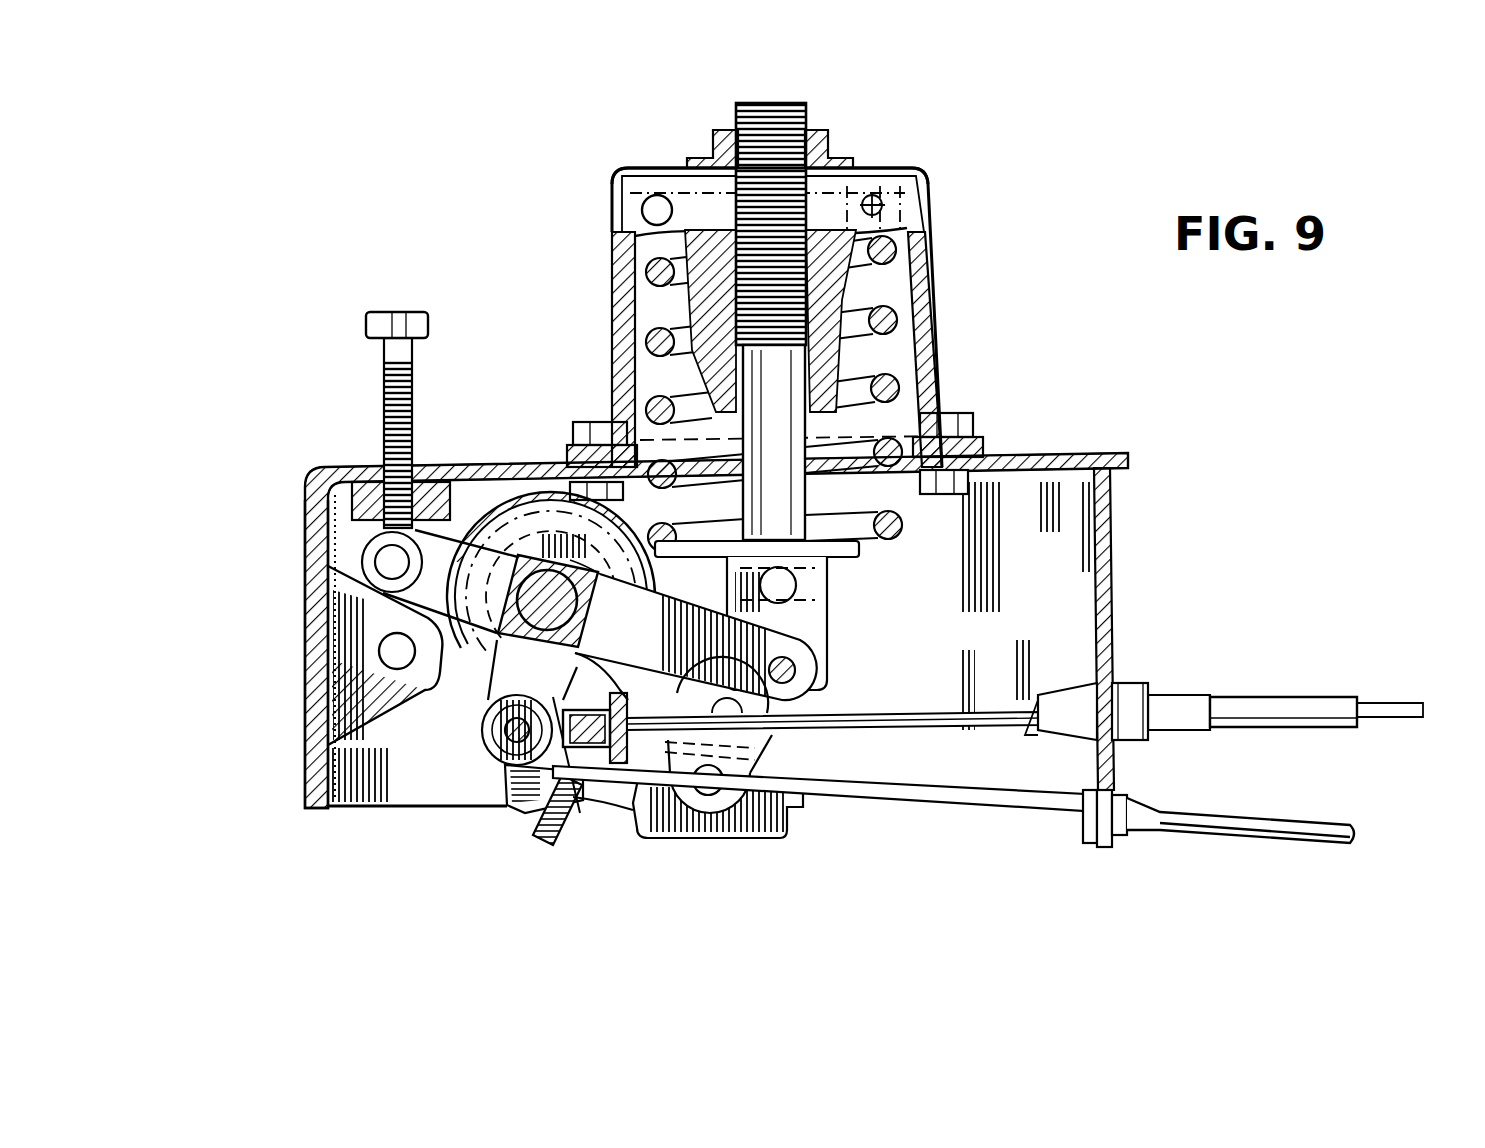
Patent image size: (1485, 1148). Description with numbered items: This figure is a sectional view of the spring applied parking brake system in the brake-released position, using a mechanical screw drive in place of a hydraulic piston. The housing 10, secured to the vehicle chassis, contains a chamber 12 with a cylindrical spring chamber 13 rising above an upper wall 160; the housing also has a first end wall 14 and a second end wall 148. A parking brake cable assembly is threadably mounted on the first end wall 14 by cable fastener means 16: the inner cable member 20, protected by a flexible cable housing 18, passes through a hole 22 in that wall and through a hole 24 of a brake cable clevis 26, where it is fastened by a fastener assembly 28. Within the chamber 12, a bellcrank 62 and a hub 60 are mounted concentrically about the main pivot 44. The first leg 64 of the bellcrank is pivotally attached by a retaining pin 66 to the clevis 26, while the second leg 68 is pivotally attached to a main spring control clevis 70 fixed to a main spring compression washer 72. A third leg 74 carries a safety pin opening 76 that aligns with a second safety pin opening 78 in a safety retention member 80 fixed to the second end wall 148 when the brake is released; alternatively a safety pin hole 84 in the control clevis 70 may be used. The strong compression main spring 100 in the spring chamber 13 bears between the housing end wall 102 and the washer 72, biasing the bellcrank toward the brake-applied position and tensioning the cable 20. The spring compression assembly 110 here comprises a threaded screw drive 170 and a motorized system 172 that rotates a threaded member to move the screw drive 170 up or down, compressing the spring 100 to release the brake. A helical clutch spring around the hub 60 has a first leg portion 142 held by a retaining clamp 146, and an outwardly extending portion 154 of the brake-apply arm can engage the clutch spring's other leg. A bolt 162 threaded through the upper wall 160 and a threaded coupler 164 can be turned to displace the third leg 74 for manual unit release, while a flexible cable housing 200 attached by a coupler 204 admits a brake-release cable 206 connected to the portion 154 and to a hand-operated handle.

The housing 10 is at (318, 773).
The chamber 12 is at (1058, 553).
The cylindrical spring chamber 13 is at (900, 367).
The first end wall 14 is at (1105, 595).
The cable fastener means 16 is at (1088, 750).
The flexible cable housing 18 is at (1310, 700).
The inner cable member 20 is at (867, 720).
The hole 22 is at (1105, 686).
The hole 24 is at (625, 772).
The brake cable clevis 26 is at (528, 790).
The fastener assembly 28 is at (585, 800).
The main pivot 44 is at (505, 603).
The hub 60 is at (348, 710).
The bellcrank 62 is at (628, 519).
The first leg 64 is at (470, 795).
The retaining pin 66 is at (500, 765).
The second leg 68 is at (660, 660).
The main spring control clevis 70 is at (832, 630).
The main spring compression washer 72 is at (868, 555).
The third leg 74 is at (420, 598).
The safety pin opening 76 is at (392, 563).
The second safety pin opening 78 is at (400, 653).
The safety retention member 80 is at (460, 675).
The safety pin hole 84 is at (798, 585).
The compression main spring 100 is at (900, 322).
The housing end wall 102 is at (640, 210).
The spring compression assembly 110 is at (626, 139).
The first leg portion 142 is at (805, 785).
The retaining clamp 146 is at (772, 742).
The second end wall 148 is at (345, 812).
The outwardly extending portion 154 is at (540, 822).
The upper wall 160 is at (512, 466).
The bolt 162 is at (380, 402).
The threaded coupler 164 is at (348, 513).
The threaded screw drive 170 is at (738, 320).
The motorized system 172 is at (830, 162).
The flexible cable housing 200 is at (1302, 822).
The coupler 204 is at (1083, 832).
The brake-release cable 206 is at (935, 818).